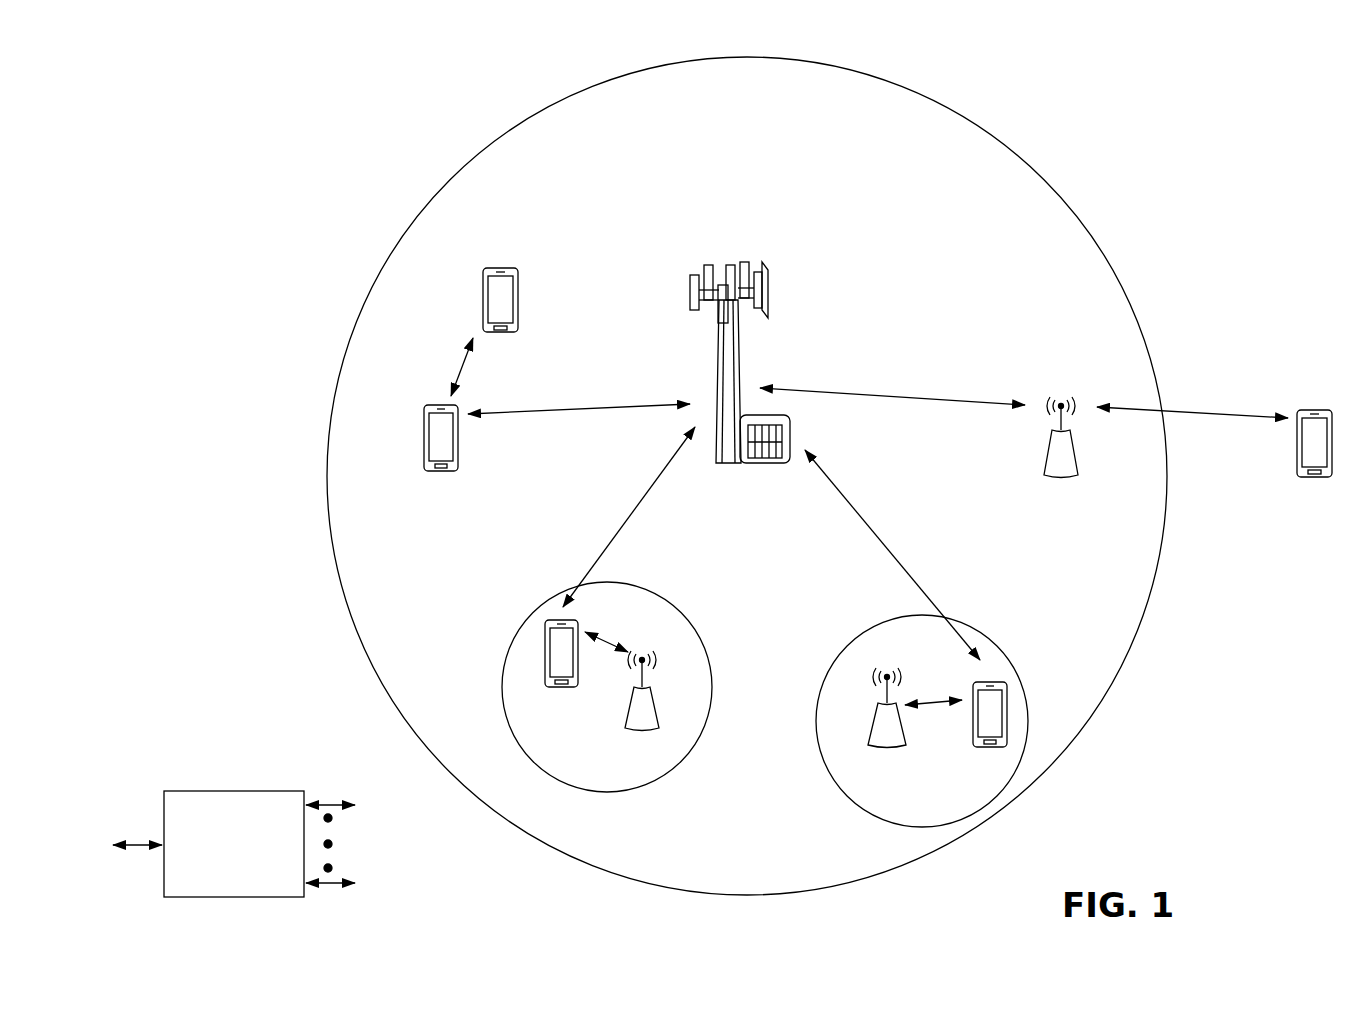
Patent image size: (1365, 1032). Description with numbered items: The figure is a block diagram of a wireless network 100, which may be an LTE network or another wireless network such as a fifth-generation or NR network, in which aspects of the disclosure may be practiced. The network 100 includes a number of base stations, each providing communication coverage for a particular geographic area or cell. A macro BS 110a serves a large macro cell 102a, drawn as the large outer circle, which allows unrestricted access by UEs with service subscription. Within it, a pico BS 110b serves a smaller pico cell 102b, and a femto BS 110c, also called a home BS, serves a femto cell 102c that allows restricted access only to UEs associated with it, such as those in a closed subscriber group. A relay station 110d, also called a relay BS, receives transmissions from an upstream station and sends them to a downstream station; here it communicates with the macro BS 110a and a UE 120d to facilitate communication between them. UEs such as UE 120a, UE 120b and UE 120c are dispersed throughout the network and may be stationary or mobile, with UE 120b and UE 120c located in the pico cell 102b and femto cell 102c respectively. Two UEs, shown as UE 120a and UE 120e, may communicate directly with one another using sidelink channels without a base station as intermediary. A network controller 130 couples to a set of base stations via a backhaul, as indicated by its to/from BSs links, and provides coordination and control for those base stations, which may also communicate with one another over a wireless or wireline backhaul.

The wireless network 100 is at (222, 55).
The macro cell 102a is at (1025, 160).
The pico cell 102b is at (700, 625).
The femto cell 102c is at (860, 640).
The macro BS 110a is at (733, 255).
The pico BS 110b is at (658, 715).
The femto BS 110c is at (870, 728).
The relay station 110d is at (1063, 395).
The UE 120a is at (424, 433).
The UE 120b is at (549, 688).
The UE 120c is at (975, 749).
The UE 120d is at (1330, 408).
The UE 120e is at (482, 286).
The network controller 130 is at (234, 790).